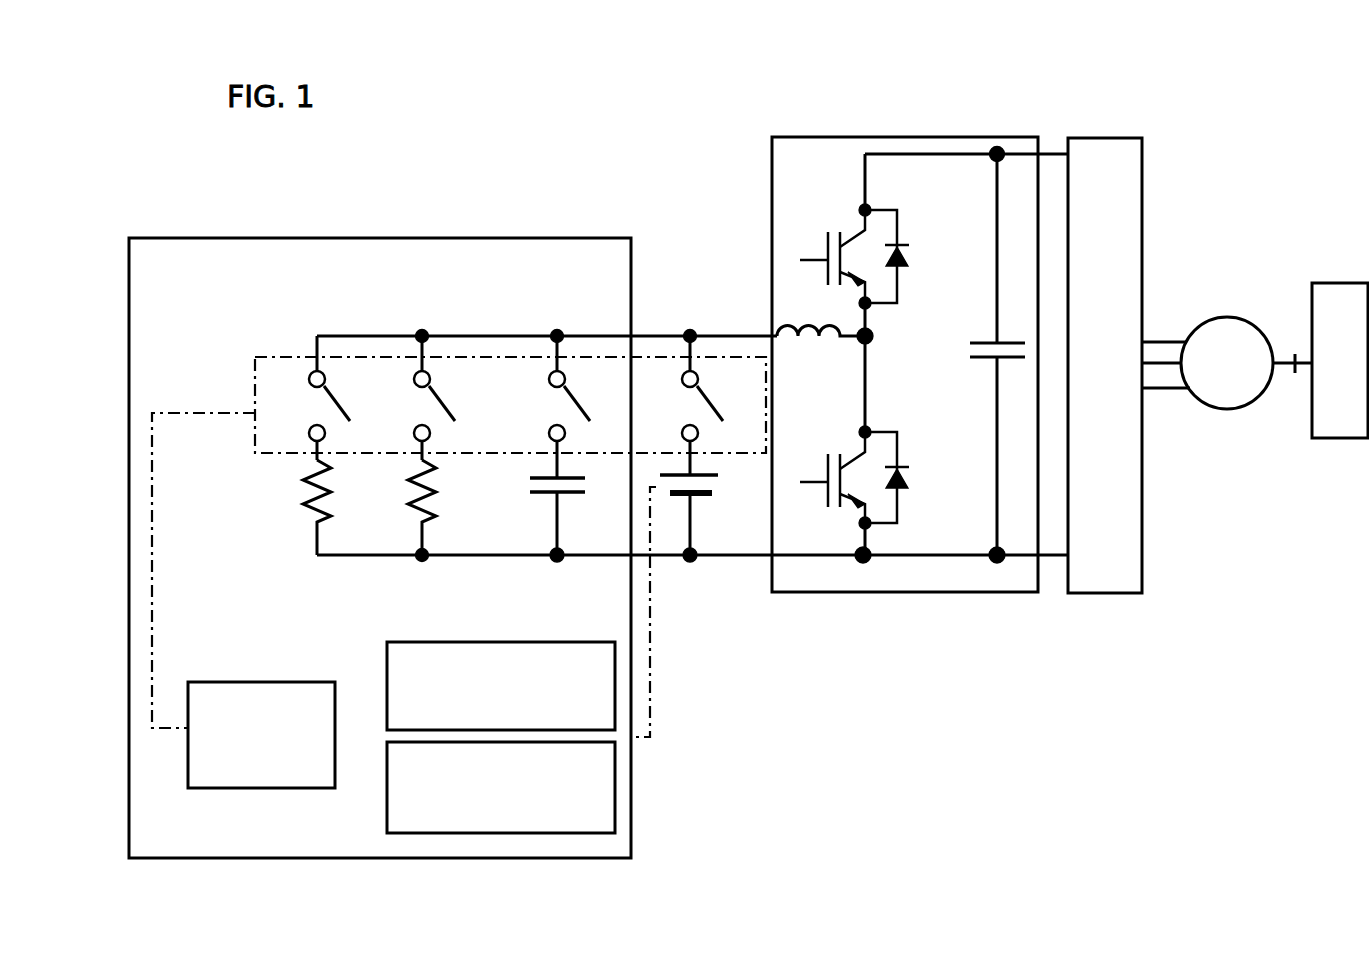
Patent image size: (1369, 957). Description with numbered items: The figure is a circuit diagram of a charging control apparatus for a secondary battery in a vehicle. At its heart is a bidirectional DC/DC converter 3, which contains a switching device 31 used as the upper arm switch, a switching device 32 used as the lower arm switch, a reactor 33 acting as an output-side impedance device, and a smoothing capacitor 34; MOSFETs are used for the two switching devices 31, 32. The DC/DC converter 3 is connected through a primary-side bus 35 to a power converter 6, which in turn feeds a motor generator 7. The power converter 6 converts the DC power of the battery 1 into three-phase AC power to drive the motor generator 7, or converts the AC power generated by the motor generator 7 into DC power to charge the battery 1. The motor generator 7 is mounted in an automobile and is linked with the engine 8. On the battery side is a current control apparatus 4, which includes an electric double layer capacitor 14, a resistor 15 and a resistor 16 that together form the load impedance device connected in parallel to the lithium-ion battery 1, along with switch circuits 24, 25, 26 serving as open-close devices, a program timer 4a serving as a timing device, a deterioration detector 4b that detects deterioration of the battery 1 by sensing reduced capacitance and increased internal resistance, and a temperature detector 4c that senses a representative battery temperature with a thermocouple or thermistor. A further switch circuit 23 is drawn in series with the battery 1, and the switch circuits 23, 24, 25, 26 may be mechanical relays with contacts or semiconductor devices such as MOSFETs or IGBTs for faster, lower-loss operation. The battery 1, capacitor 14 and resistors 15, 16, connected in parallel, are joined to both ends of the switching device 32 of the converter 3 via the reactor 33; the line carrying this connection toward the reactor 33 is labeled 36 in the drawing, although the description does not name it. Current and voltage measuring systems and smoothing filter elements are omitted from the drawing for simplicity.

The battery 1 is at (705, 495).
The bidirectional DC/DC converter 3 is at (925, 137).
The current control apparatus 4 is at (515, 238).
The program timer 4a is at (253, 681).
The deterioration detector 4b is at (520, 642).
The temperature detector 4c is at (385, 792).
The power converter 6 is at (1142, 205).
The motor generator 7 is at (1227, 317).
The engine 8 is at (1338, 283).
The capacitor (EDLC) 14 is at (547, 497).
The resistor (R1) 15 is at (420, 505).
The resistor (R2) 16 is at (315, 505).
The switch circuit (S3) 23 is at (720, 395).
The switch circuit (S4) 24 is at (580, 392).
The switch circuit (S5) 25 is at (450, 388).
The switch circuit (S6) 26 is at (340, 396).
The switching device (S1) 31 is at (850, 222).
The switching device (S2) 32 is at (818, 495).
The reactor (L1) 33 is at (772, 320).
The smoothing capacitor (CDC) 34 is at (975, 358).
The primary-side bus 35 is at (1052, 155).
The connection line 36 is at (657, 330).